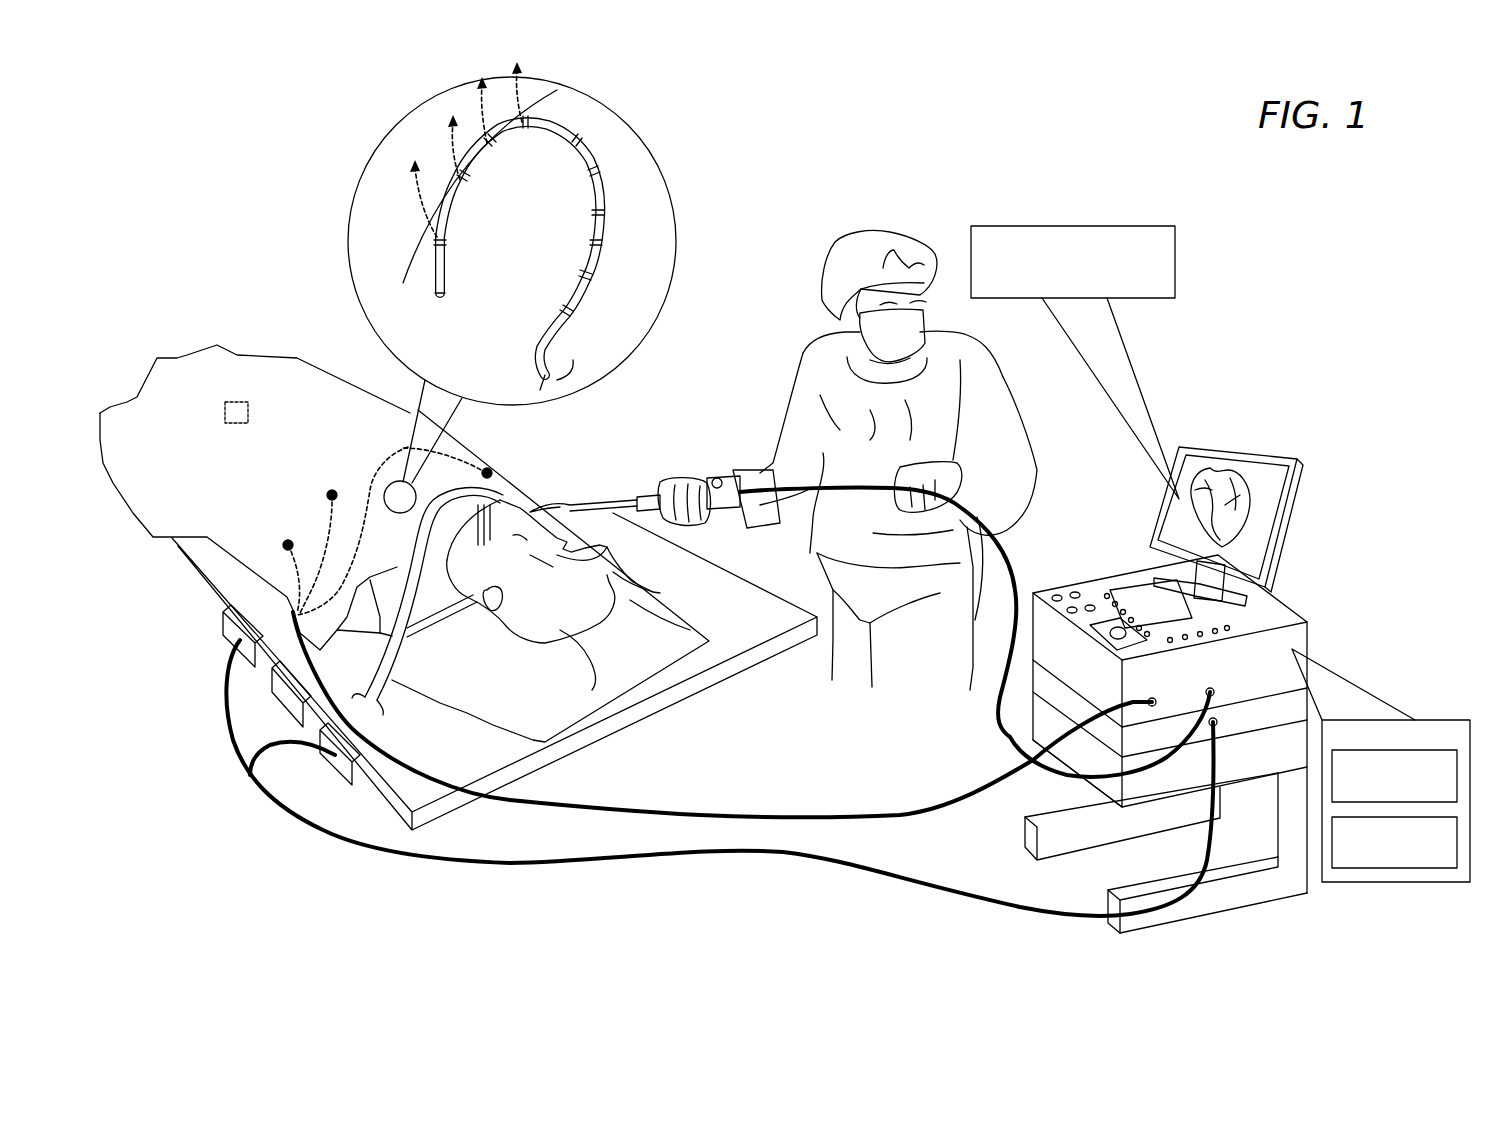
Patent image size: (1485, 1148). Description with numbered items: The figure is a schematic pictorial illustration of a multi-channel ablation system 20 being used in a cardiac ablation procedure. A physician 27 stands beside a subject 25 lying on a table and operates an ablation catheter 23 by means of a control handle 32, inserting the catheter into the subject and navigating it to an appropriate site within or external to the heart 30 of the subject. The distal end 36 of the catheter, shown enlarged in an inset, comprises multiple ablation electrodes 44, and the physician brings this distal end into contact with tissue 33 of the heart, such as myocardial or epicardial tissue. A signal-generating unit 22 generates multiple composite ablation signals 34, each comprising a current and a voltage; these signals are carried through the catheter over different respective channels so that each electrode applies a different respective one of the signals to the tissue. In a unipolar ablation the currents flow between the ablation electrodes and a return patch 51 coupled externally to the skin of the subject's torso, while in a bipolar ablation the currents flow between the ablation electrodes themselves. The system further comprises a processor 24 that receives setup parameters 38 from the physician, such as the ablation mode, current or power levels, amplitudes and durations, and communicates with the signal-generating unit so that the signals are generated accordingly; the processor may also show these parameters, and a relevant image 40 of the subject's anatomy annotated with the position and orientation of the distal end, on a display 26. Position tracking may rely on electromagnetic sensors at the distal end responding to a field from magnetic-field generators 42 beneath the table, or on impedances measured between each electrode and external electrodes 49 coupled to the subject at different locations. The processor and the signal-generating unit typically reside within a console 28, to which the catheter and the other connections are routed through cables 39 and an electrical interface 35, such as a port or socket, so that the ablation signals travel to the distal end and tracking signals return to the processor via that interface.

The multi-channel ablation system 20 is at (1349, 422).
The signal-generating unit 22 is at (1433, 748).
The ablation catheter 23 is at (615, 500).
The processor 24 is at (1437, 870).
The subject 25 is at (660, 588).
The display 26 is at (1259, 454).
The physician 27 is at (823, 276).
The console 28 is at (1275, 594).
The heart 30 is at (373, 480).
The control handle 32 is at (738, 477).
The tissue 33 is at (545, 97).
The signals 34 is at (412, 183).
The electrical interface 35 is at (1214, 692).
The distal end 36 is at (600, 317).
The setup parameters 38 is at (1030, 226).
The cables 39 is at (763, 813).
The image 40 is at (1207, 461).
The magnetic-field generators 42 is at (225, 662).
The ablation electrodes 44 is at (567, 307).
The external electrodes 49 is at (332, 495).
The return patch 51 is at (236, 400).